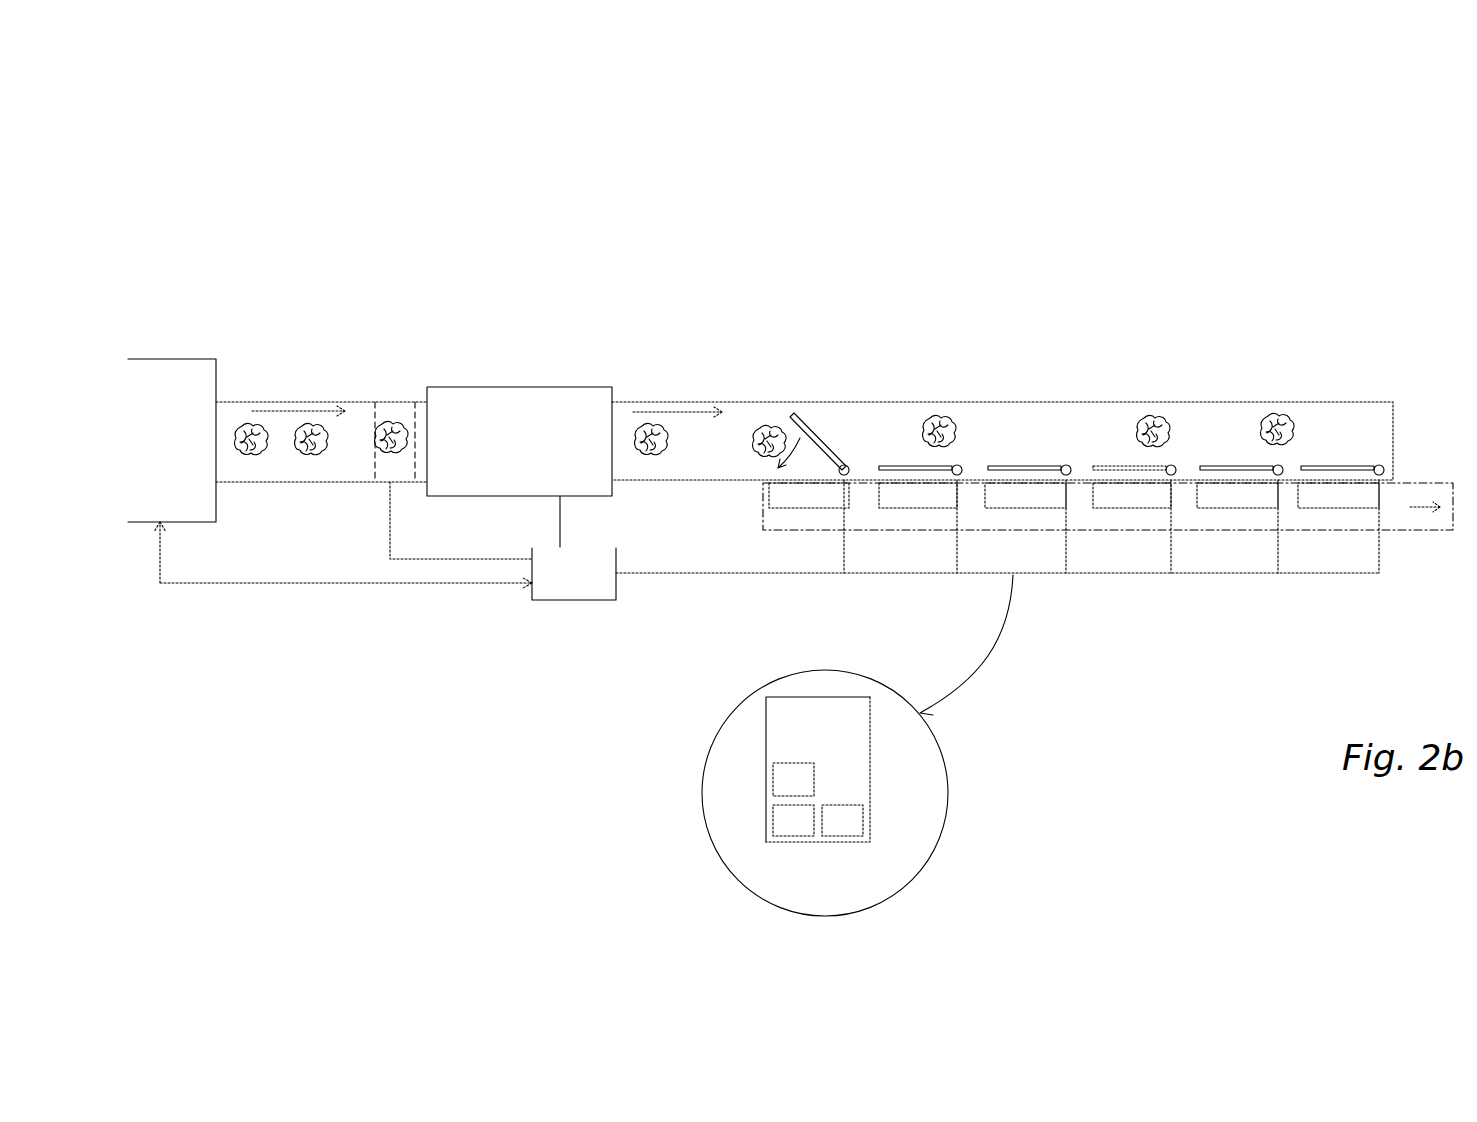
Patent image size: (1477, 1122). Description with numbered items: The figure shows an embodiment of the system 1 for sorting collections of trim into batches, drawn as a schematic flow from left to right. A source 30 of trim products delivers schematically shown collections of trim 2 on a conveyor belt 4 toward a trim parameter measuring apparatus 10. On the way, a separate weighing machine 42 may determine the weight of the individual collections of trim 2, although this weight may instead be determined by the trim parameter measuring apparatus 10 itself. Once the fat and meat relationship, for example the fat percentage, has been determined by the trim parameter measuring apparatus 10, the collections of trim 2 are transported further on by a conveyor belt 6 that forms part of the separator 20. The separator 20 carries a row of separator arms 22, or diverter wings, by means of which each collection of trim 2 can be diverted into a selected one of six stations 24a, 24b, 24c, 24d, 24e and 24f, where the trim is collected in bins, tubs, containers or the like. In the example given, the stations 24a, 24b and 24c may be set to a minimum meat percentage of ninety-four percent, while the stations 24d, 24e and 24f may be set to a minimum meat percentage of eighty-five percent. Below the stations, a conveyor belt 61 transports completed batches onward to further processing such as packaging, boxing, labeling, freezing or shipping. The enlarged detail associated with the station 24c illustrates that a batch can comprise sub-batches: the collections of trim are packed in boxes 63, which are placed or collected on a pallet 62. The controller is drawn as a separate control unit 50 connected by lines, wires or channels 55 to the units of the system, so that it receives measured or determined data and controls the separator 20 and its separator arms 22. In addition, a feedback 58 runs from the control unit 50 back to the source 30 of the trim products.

The system 1 is at (934, 319).
The collections of trim 2 is at (252, 420).
The conveyor belt 4 is at (317, 402).
The conveyor belt 6 is at (697, 481).
The trim parameter measuring apparatus 10 is at (512, 387).
The separator 20 is at (1153, 356).
The separator arms 22 is at (828, 438).
The station 24a is at (798, 508).
The station 24b is at (908, 508).
The station 24c is at (1017, 508).
The station 24d is at (1127, 508).
The station 24e is at (1237, 508).
The station 24f is at (1337, 508).
The source 30 is at (167, 359).
The weighing machine 42 is at (390, 401).
The control unit 50 is at (573, 601).
The lines, wires or channels 55 is at (422, 559).
The feedback 58 is at (295, 585).
The conveyor belt 61 is at (1420, 530).
The pallet 62 is at (870, 763).
The boxes 63 is at (773, 775).